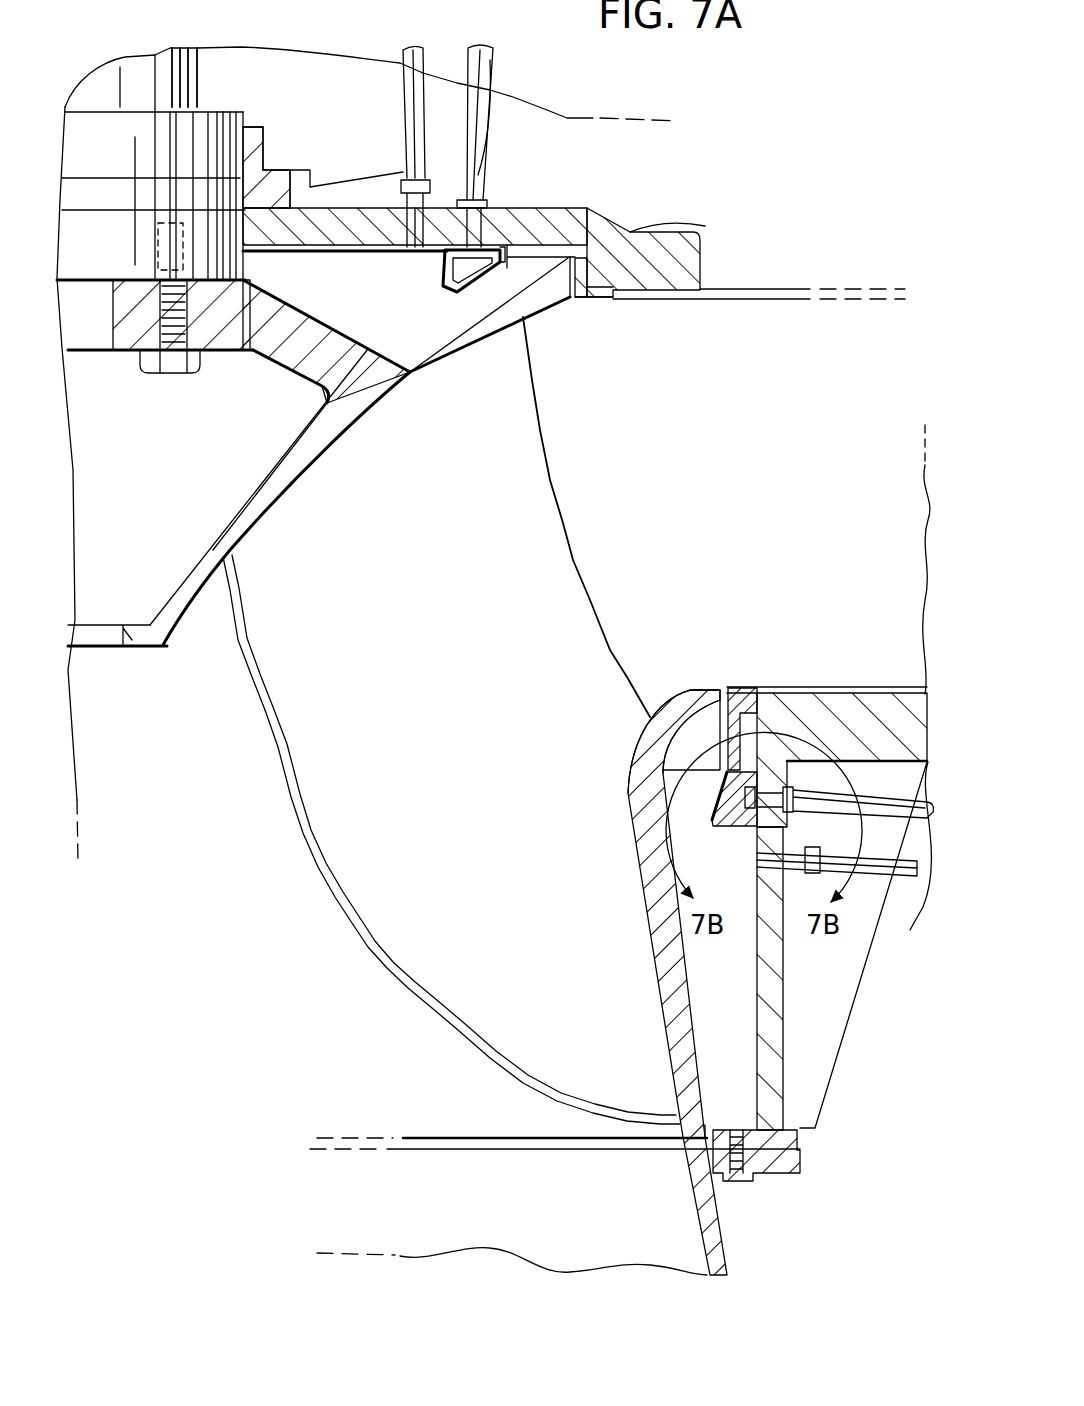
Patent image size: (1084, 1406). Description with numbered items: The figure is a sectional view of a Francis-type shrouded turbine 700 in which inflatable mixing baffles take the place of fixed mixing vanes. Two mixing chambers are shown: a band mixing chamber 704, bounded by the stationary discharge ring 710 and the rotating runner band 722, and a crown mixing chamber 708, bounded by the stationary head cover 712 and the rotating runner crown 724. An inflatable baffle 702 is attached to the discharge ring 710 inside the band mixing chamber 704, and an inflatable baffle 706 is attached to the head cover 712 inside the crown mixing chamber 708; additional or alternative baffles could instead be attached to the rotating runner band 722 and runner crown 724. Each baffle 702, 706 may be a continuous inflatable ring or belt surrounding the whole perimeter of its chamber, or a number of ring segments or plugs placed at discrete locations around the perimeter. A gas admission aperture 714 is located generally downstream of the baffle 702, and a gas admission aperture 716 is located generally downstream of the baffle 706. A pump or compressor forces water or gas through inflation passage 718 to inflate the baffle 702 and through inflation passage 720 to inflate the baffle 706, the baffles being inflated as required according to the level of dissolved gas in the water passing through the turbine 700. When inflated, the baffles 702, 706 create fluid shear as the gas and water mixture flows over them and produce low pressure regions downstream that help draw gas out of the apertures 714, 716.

The shrouded turbine 700 is at (636, 180).
The inflatable baffle 702 is at (710, 823).
The band mixing chamber 704 is at (740, 997).
The inflatable baffle 706 is at (443, 293).
The crown mixing chamber 708 is at (350, 297).
The discharge ring 710 is at (787, 1030).
The head cover 712 is at (700, 228).
The gas admission aperture 714 is at (757, 857).
The gas admission aperture 716 is at (422, 258).
The inflation passage 718 is at (922, 890).
The inflation passage 720 is at (490, 162).
The runner band 722 is at (683, 1040).
The runner crown 724 is at (477, 297).